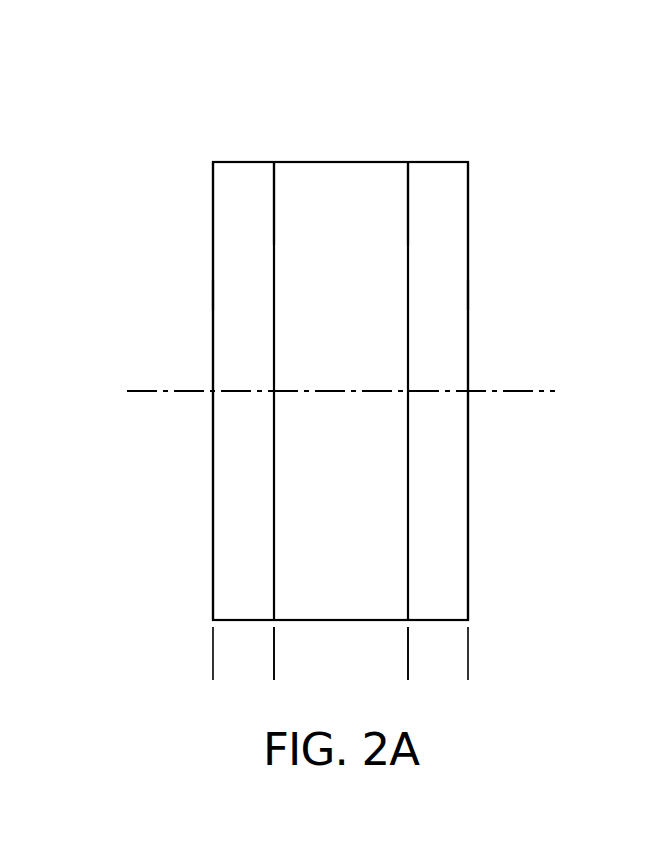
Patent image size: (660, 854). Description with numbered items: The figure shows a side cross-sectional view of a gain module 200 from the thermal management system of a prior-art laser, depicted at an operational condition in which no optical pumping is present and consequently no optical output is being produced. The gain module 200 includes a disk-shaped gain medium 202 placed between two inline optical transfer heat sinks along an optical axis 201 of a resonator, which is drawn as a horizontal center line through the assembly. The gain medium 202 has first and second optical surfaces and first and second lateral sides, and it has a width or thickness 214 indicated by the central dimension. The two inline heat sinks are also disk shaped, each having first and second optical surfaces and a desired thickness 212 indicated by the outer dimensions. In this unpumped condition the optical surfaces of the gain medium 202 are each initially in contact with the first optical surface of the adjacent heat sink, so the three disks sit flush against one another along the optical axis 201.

The gain module 200 is at (242, 123).
The optical axis 201 is at (150, 390).
The gain medium 202 is at (392, 507).
The thickness 212 is at (175, 670).
The width or thickness 214 is at (407, 670).